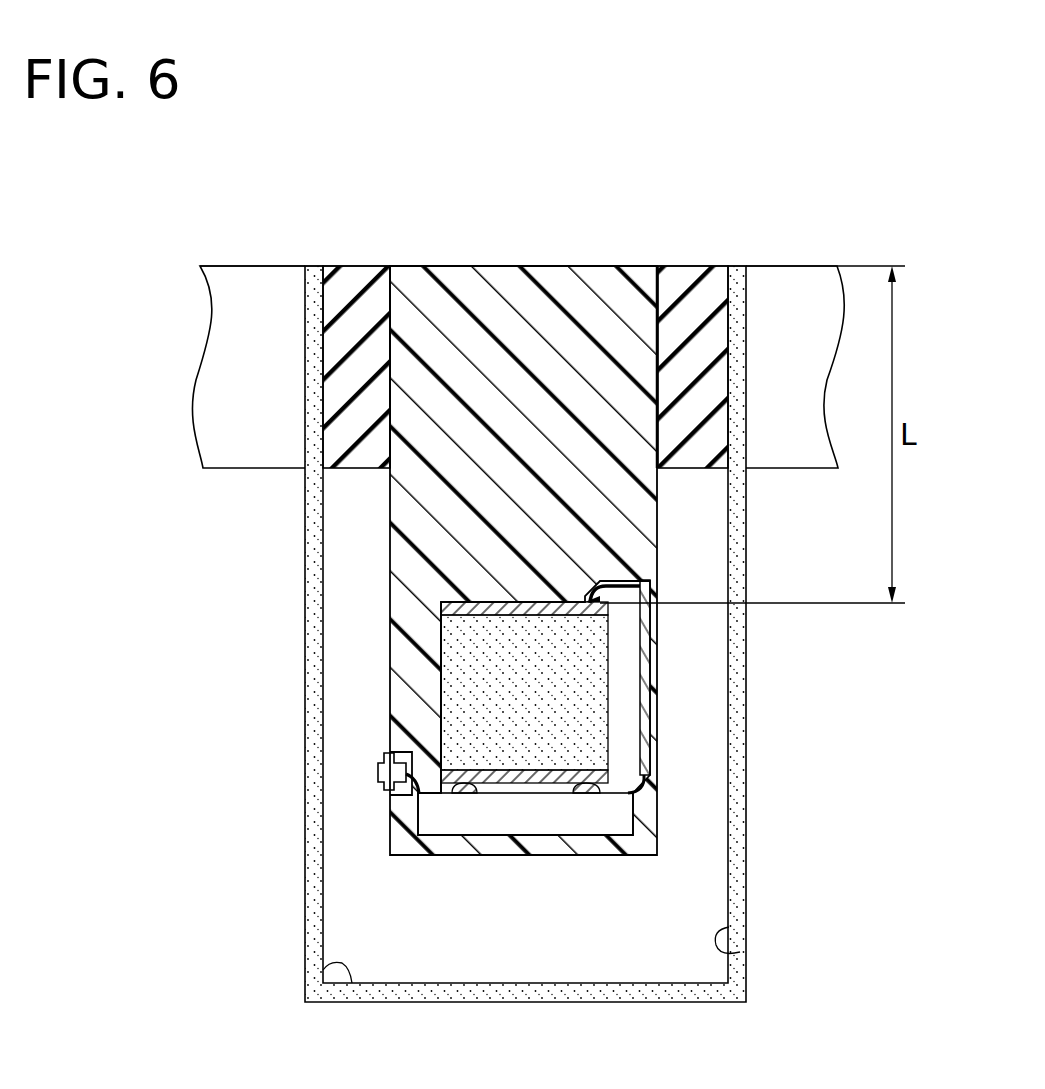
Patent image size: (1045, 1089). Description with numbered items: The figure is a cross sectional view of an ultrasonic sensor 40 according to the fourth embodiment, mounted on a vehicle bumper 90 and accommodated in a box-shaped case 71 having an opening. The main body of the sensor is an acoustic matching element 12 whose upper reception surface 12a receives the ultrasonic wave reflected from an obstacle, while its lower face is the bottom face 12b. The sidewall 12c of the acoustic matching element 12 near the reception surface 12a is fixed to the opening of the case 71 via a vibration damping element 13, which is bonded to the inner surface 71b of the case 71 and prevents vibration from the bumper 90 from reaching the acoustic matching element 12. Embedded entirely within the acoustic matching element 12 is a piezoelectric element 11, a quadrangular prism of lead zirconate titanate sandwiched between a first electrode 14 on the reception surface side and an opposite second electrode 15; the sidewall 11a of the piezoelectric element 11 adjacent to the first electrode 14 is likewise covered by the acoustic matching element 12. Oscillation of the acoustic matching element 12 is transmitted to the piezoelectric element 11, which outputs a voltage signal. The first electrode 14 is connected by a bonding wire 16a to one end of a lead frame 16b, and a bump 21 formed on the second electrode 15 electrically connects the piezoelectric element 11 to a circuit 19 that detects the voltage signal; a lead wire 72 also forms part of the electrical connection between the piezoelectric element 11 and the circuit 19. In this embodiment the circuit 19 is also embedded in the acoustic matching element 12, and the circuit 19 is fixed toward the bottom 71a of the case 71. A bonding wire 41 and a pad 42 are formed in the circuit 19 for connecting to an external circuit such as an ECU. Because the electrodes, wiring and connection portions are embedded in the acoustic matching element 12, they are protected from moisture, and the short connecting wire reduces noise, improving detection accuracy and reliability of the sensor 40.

The ultrasonic sensor 40 is at (820, 229).
The bumper 90 is at (264, 274).
The case 71 is at (740, 880).
The bottom of the case 71a is at (325, 978).
The inner surface of the case 71b is at (728, 950).
The lead wire 72 is at (640, 791).
The vibration damping element 13 is at (358, 278).
The acoustic matching element 12 is at (655, 494).
The reception surface 12a is at (550, 266).
The dielectric bottom face 12b is at (408, 858).
The sidewall of the acoustic matching element 12c is at (668, 292).
The first electrode 14 is at (441, 605).
The piezoelectric element 11 is at (450, 690).
The sidewall of the piezoelectric element 11a is at (443, 663).
The second electrode 15 is at (455, 762).
The bonding wire 16a is at (606, 582).
The lead frame 16b is at (646, 660).
The bump 21 is at (466, 800).
The circuit 19 is at (498, 822).
The pad 42 is at (378, 772).
The bonding wire 41 is at (417, 800).